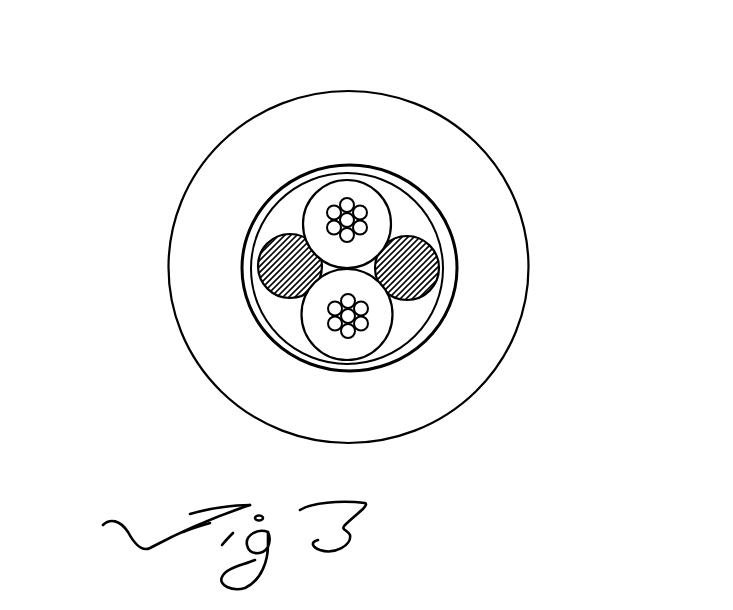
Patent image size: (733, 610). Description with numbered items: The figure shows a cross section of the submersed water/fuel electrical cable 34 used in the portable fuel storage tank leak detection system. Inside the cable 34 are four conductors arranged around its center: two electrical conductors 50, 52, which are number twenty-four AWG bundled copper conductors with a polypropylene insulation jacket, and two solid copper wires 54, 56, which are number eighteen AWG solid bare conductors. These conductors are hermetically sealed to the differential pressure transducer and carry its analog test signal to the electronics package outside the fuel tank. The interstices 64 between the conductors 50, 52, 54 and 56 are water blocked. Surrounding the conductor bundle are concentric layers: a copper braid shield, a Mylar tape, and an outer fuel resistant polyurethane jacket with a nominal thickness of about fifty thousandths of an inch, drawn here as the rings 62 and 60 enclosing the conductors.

The electrical cable 34 is at (468, 137).
The electrical conductor 50 is at (350, 188).
The electrical conductor 52 is at (367, 338).
The solid copper wire 54 is at (280, 248).
The solid copper wire 56 is at (423, 272).
The outer jacket 60 is at (213, 312).
The shield tape 62 is at (424, 197).
The interstices 64 is at (288, 312).